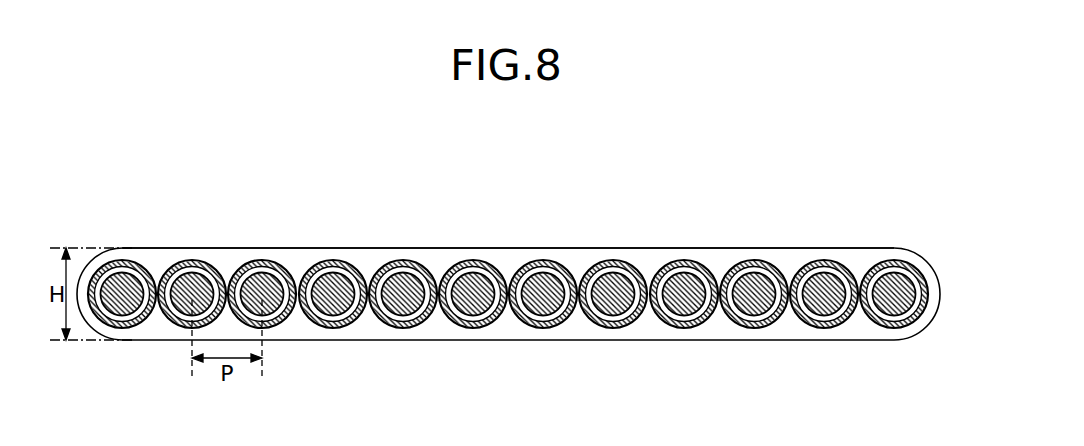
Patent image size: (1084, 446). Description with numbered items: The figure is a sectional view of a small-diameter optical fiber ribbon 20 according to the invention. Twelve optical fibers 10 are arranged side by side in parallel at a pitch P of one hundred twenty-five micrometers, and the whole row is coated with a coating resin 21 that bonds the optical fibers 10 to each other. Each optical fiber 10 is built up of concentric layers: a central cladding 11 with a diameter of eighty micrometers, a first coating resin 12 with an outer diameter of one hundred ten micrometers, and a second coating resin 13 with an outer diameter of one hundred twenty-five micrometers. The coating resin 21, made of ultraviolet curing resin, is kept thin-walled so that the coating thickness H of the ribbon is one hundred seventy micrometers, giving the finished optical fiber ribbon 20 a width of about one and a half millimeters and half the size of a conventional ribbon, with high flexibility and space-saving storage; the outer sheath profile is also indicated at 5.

The flat cable 5 is at (548, 248).
The optical fiber 10 is at (130, 256).
The cladding 11 is at (197, 281).
The first coating resin 12 is at (274, 268).
The second coating resin 13 is at (346, 271).
The optical fiber ribbon 20 is at (508, 234).
The coating resin 21 is at (717, 262).